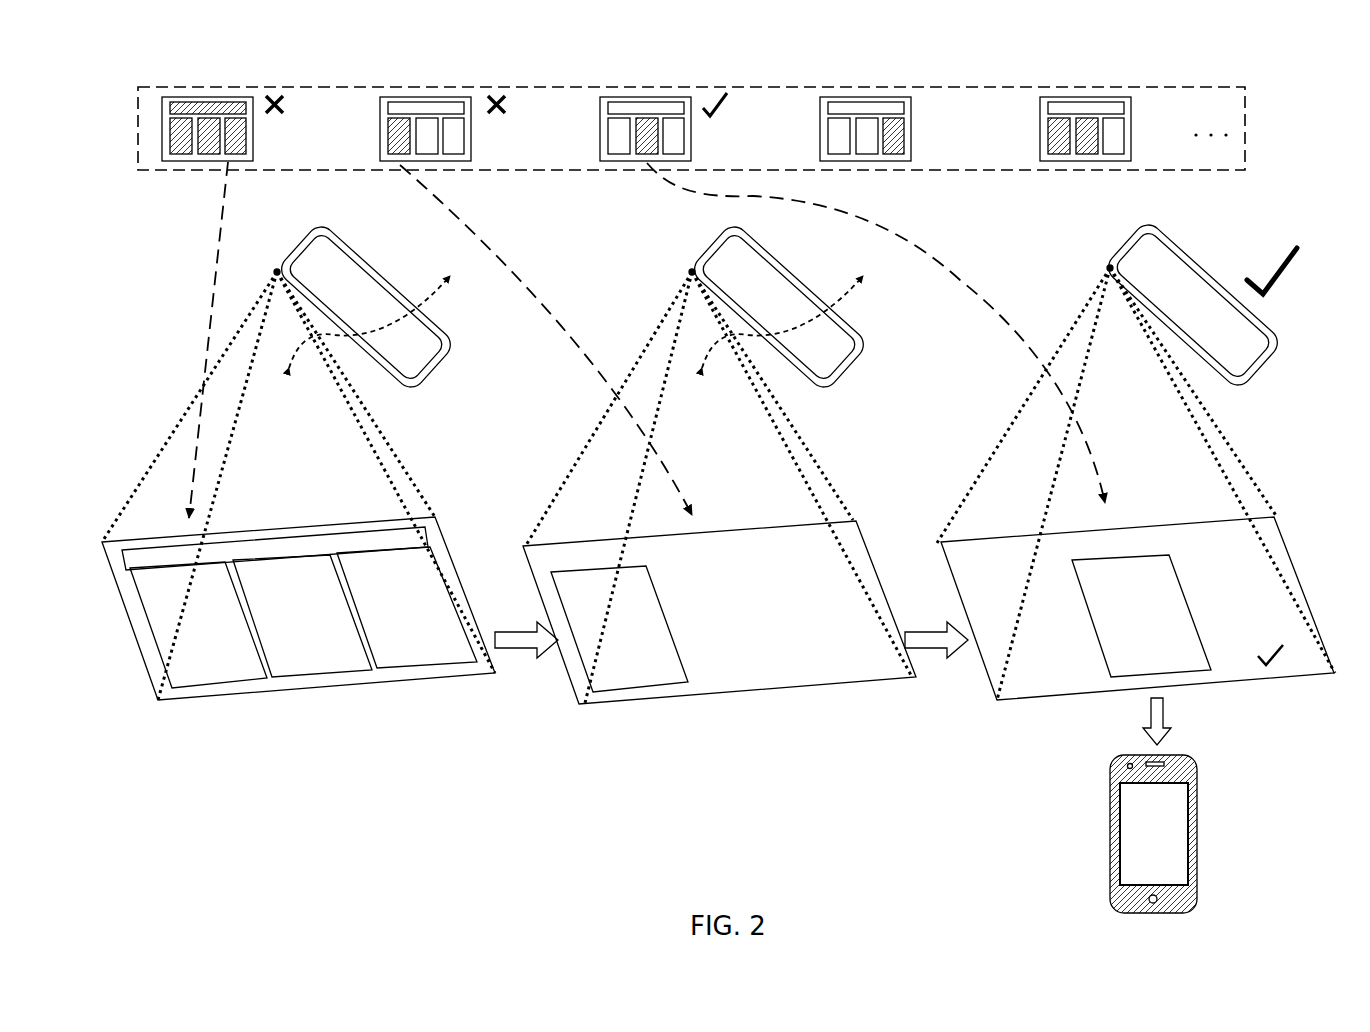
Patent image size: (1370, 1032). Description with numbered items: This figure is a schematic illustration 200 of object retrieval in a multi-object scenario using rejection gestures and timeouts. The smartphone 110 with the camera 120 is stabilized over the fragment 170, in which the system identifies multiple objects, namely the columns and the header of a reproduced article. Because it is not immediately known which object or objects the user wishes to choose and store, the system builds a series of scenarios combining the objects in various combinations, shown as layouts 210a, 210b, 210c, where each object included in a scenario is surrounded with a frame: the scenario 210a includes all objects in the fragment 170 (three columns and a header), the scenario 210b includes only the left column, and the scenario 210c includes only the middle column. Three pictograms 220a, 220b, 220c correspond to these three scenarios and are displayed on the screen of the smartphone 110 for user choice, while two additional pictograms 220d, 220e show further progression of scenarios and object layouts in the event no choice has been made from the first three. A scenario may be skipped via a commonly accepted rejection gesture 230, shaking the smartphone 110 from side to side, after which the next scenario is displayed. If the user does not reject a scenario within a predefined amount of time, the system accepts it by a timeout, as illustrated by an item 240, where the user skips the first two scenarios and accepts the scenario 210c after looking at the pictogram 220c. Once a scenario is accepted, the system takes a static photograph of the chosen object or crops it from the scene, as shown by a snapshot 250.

The schematic illustration 200 is at (1300, 92).
The pictogram 220a is at (197, 92).
The pictogram 220b is at (438, 92).
The pictogram 220c is at (634, 92).
The pictogram 220d is at (855, 92).
The pictogram 220e is at (1068, 92).
The smartphone 110 is at (340, 232).
The camera 120 is at (277, 262).
The rejection gesture 230 is at (436, 292).
The fragment 170 is at (385, 519).
The layout 210a is at (258, 688).
The layout 210b is at (612, 689).
The layout 210c is at (1122, 681).
The item 240 is at (1240, 256).
The snapshot 250 is at (1118, 846).